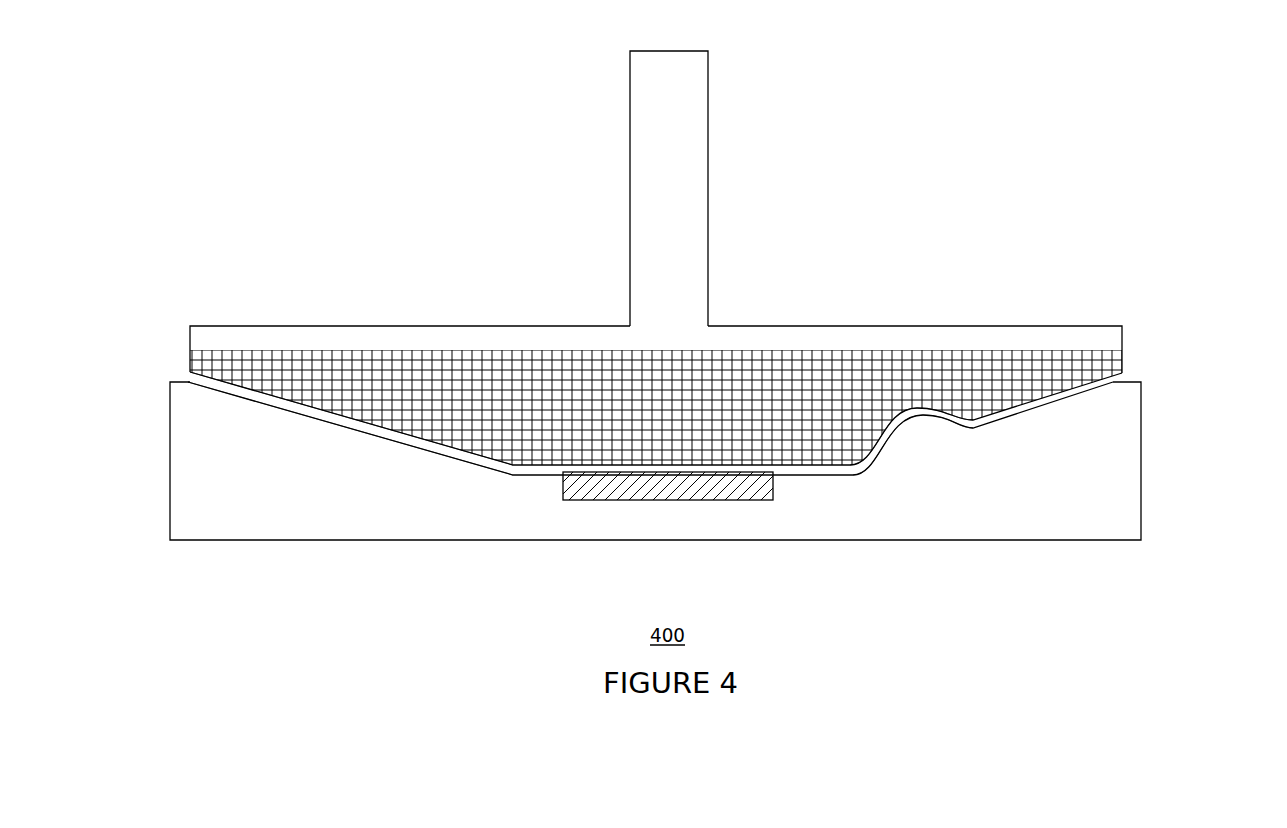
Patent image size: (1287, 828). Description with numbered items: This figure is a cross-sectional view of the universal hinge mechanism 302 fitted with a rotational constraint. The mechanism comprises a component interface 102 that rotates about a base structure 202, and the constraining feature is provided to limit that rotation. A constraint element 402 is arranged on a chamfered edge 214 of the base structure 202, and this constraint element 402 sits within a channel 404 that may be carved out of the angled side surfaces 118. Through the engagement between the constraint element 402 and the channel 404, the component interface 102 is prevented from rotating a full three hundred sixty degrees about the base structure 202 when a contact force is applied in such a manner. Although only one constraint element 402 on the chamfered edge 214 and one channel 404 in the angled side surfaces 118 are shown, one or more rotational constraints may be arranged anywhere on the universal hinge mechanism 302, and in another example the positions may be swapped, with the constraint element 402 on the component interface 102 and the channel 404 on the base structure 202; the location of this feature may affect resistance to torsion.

The component interface 102 is at (190, 338).
The angled side surfaces 118 is at (1122, 375).
The base structure 202 is at (1141, 448).
The chamfered edge 214 is at (352, 427).
The universal hinge mechanism 302 is at (1050, 126).
The constraint element 402 is at (911, 441).
The channel 404 is at (874, 428).